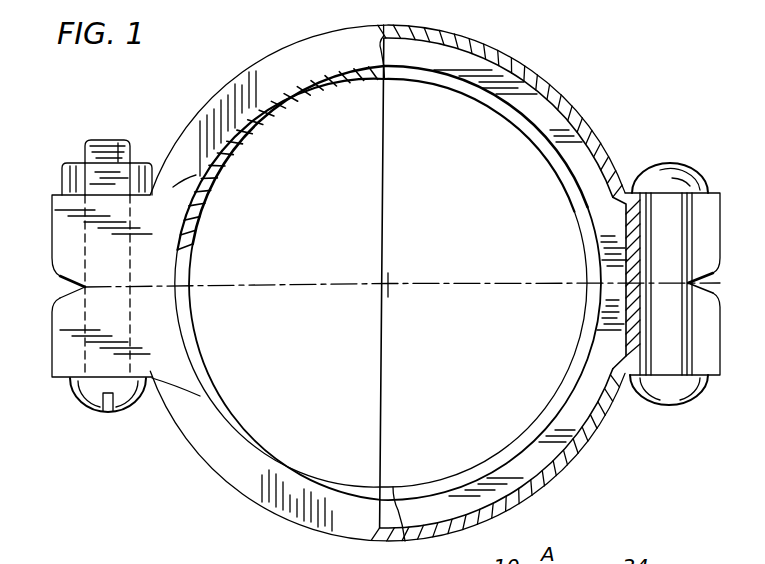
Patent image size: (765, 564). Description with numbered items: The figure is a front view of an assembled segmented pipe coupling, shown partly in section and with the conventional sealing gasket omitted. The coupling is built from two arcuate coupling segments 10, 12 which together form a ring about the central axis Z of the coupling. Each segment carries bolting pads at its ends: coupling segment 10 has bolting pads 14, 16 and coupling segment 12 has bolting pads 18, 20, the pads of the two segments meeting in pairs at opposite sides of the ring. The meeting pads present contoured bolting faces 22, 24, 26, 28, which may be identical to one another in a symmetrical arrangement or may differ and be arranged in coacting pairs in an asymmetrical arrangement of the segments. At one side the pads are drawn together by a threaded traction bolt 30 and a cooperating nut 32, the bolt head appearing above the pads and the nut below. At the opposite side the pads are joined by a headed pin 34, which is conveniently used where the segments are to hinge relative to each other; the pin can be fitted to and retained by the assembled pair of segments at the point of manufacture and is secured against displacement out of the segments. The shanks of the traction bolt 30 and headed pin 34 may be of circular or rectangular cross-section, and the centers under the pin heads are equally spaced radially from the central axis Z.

The coupling segment 10 is at (207, 110).
The coupling segment 12 is at (325, 528).
The bolting pad 14 is at (58, 250).
The bolting pad 16 is at (709, 207).
The bolting pad 18 is at (53, 376).
The bolting pad 20 is at (712, 378).
The contoured bolting face 22 is at (56, 279).
The contoured bolting face 24 is at (714, 270).
The contoured bolting face 26 is at (50, 297).
The contoured bolting face 28 is at (710, 298).
The traction bolt 30 is at (107, 138).
The nut 32 is at (62, 174).
The headed pin 34 is at (662, 205).
The central axis Z is at (392, 283).